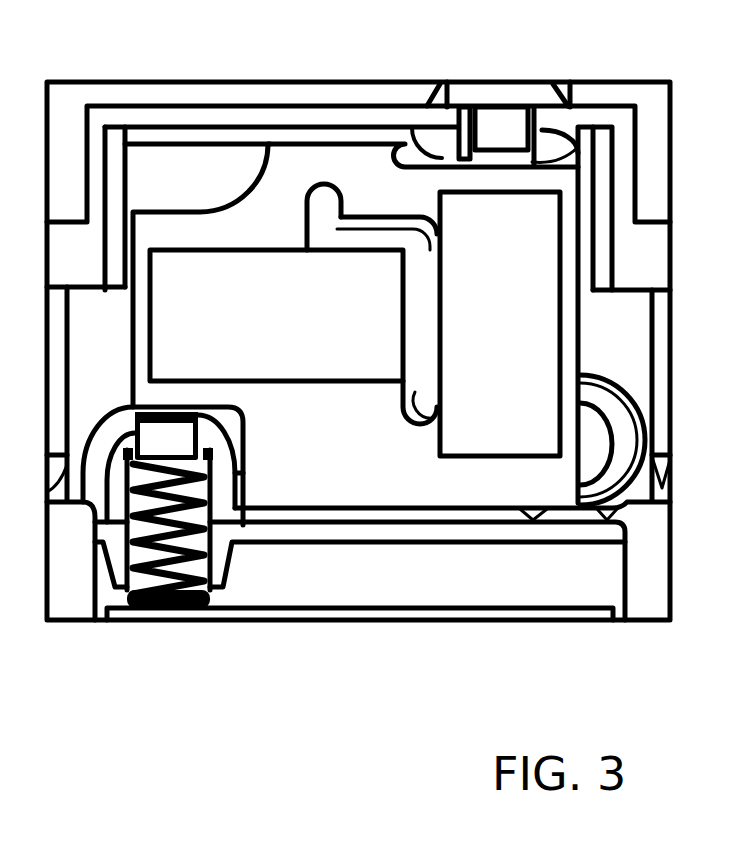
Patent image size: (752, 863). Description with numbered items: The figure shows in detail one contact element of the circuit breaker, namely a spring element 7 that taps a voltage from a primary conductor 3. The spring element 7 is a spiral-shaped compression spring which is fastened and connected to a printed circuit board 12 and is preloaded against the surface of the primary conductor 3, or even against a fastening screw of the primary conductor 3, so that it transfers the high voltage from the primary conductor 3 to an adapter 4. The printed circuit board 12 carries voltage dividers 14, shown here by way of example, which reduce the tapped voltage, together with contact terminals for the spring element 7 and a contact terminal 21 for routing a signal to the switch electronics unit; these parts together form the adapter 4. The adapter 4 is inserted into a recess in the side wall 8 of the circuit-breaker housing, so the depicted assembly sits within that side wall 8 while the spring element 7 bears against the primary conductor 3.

The primary conductor 3 is at (423, 607).
The adapter 4 is at (318, 472).
The spring element 7 is at (207, 610).
The side wall 8 is at (652, 196).
The printed circuit board 12 is at (395, 445).
The voltage divider 14 is at (330, 343).
The contact terminal 21 is at (507, 137).